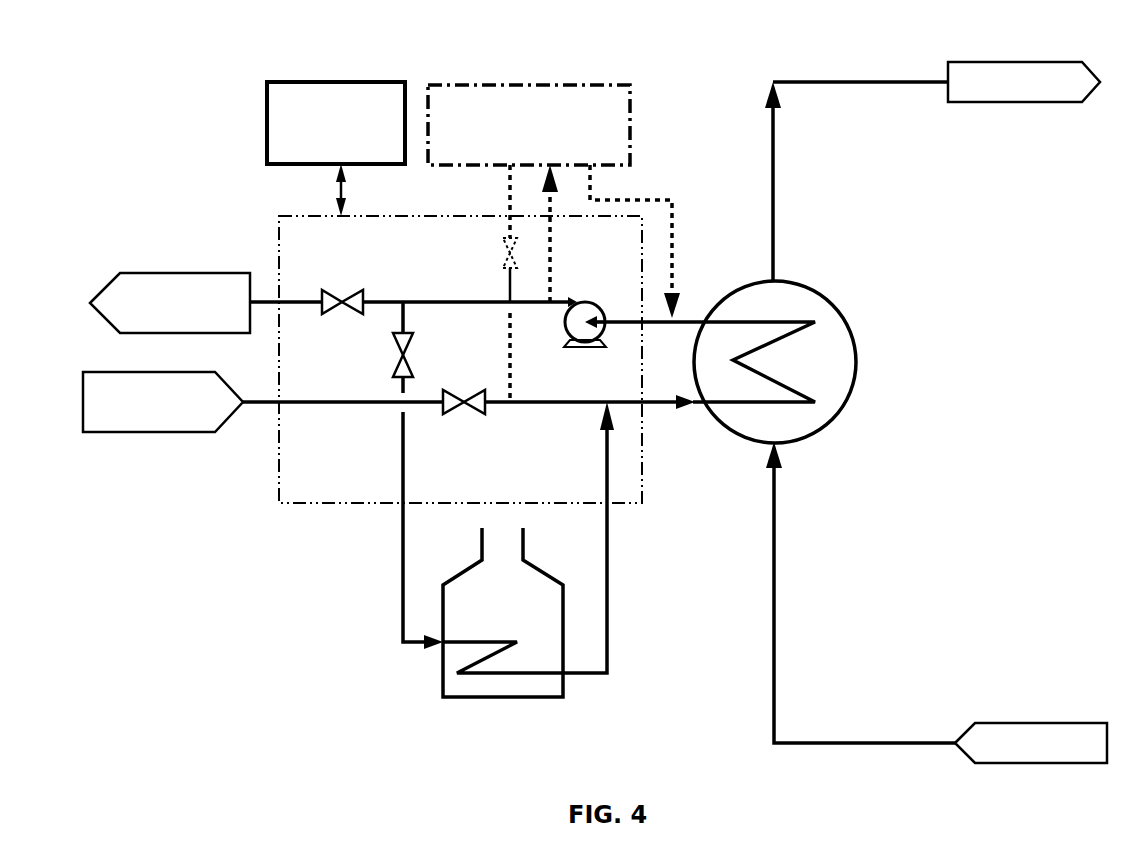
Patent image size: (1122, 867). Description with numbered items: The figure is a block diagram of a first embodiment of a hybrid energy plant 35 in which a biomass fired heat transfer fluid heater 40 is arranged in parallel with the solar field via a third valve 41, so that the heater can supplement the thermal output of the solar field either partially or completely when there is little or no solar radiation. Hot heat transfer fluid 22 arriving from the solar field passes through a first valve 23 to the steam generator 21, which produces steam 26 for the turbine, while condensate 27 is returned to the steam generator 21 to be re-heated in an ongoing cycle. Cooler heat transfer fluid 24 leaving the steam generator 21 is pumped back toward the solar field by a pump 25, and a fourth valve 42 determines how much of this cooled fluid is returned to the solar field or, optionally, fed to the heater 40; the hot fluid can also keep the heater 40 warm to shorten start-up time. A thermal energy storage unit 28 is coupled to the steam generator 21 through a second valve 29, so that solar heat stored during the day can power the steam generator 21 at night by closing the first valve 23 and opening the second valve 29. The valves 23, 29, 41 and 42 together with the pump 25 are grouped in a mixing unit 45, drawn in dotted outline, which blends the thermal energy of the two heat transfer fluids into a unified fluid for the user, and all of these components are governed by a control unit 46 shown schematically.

The solar steam generator 21 is at (824, 430).
The heat transfer fluid 22 is at (180, 433).
The first valve 23 is at (472, 410).
The cooler heat transfer fluid 24 is at (158, 273).
The pump 25 is at (593, 350).
The steam 26 is at (1036, 104).
The condensate 27 is at (1057, 765).
The thermal energy storage (TES) 28 is at (517, 84).
The second valve 29 is at (507, 262).
The hybrid energy plant 35 is at (378, 712).
The biomass fired heat transfer fluid (HTF) heater 40 is at (566, 682).
The third valve 41 is at (396, 368).
The fourth valve 42 is at (338, 299).
The mixing unit 45 is at (350, 504).
The control unit 46 is at (313, 81).